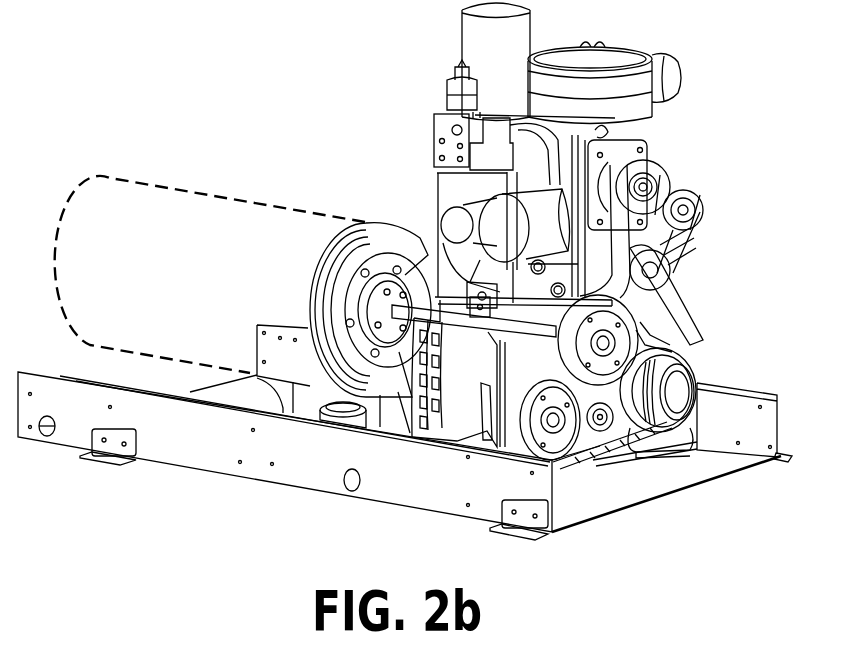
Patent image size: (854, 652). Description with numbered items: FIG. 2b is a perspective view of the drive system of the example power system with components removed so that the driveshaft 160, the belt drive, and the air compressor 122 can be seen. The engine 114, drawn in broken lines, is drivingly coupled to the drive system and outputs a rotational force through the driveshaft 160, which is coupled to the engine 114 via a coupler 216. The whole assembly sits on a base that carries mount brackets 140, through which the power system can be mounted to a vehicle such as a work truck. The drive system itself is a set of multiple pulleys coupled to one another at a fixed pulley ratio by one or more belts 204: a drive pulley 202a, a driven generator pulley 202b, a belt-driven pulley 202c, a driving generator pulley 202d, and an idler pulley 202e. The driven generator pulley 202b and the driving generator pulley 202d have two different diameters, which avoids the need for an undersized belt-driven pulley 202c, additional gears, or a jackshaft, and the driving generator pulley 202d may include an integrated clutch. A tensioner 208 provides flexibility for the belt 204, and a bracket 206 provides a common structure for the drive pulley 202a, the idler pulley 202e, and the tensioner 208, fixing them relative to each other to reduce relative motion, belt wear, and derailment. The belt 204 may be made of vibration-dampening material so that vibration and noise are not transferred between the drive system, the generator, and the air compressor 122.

The engine 114 is at (252, 200).
The air compressor 122 is at (679, 87).
The mount brackets 140 is at (98, 462).
The driveshaft 160 is at (488, 340).
The drive pulley 202a is at (562, 322).
The driven generator pulley 202b is at (690, 372).
The belt-driven pulley 202c is at (655, 172).
The driving generator pulley 202d is at (672, 352).
The idler pulley 202e is at (548, 470).
The belt 204 is at (658, 325).
The bracket 206 is at (489, 388).
The tensioner 208 is at (638, 452).
The coupler 216 is at (383, 300).